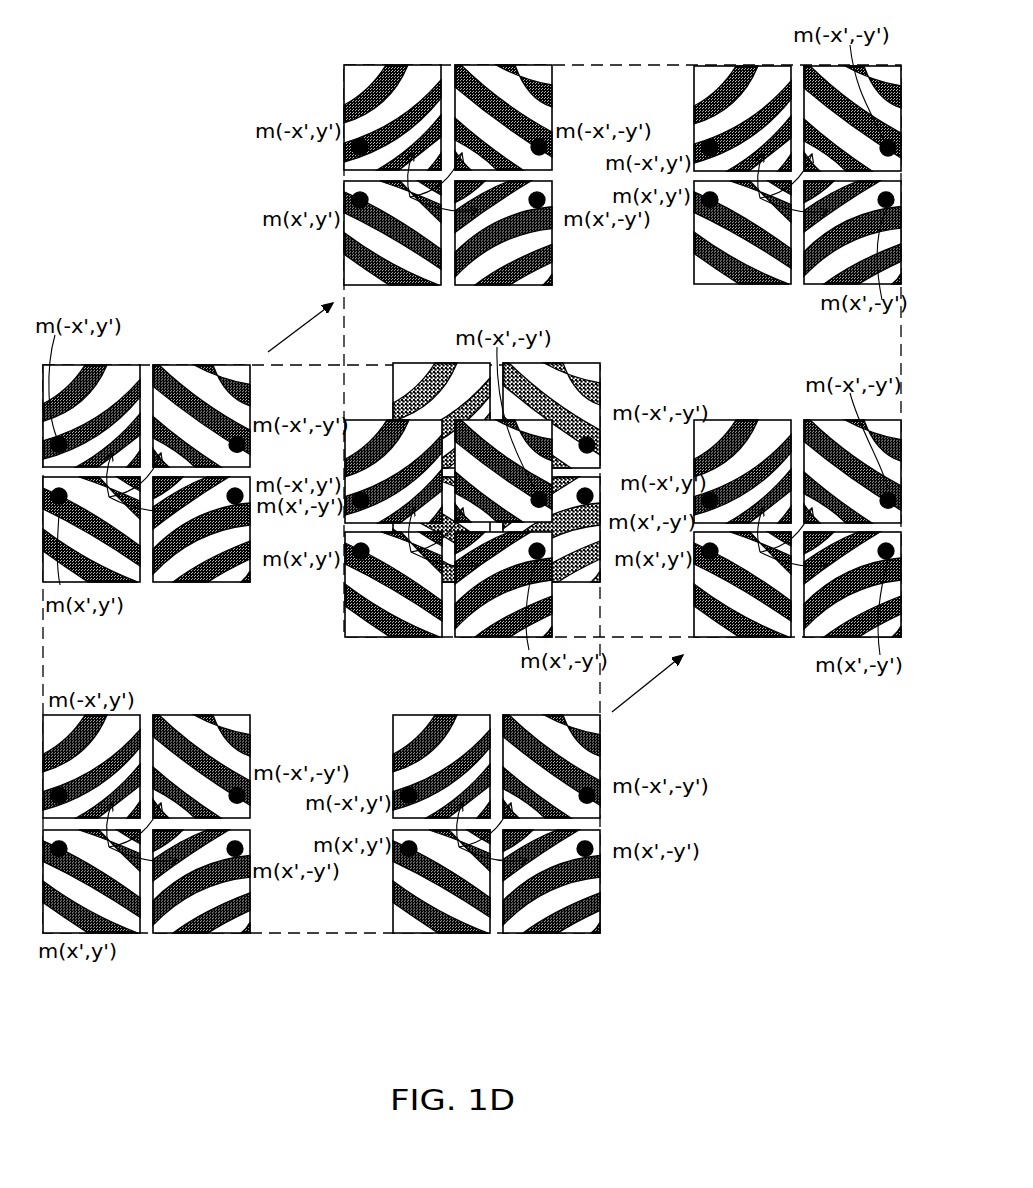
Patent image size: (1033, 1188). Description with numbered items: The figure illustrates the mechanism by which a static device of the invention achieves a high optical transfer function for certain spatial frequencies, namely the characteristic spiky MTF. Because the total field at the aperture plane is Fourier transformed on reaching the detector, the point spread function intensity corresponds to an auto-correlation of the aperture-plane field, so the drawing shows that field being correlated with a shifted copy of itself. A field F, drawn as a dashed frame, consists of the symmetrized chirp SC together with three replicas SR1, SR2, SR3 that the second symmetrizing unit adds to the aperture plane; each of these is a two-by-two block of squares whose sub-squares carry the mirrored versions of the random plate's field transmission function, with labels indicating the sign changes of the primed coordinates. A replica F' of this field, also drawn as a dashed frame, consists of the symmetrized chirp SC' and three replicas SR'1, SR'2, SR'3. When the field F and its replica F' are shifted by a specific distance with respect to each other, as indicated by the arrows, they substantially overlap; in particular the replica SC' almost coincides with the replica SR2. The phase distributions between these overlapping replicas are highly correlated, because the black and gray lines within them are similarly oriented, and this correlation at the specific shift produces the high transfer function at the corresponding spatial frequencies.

The field F is at (622, 329).
The replica of the field F' is at (321, 624).
The symmetrized chirp SC is at (797, 205).
The replica of the symmetrized chirp SC' is at (532, 472).
The first replica of the symmetrized chirp SR1 is at (552, 266).
The second replica of the symmetrized chirp SR2 is at (552, 612).
The third replica of the symmetrized chirp SR3 is at (797, 504).
The first replica in the shifted field SR'1 is at (146, 498).
The second replica in the shifted field SR'2 is at (184, 824).
The third replica in the shifted field SR'3 is at (496, 803).